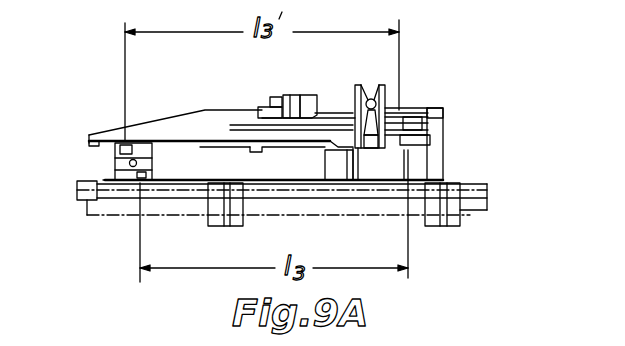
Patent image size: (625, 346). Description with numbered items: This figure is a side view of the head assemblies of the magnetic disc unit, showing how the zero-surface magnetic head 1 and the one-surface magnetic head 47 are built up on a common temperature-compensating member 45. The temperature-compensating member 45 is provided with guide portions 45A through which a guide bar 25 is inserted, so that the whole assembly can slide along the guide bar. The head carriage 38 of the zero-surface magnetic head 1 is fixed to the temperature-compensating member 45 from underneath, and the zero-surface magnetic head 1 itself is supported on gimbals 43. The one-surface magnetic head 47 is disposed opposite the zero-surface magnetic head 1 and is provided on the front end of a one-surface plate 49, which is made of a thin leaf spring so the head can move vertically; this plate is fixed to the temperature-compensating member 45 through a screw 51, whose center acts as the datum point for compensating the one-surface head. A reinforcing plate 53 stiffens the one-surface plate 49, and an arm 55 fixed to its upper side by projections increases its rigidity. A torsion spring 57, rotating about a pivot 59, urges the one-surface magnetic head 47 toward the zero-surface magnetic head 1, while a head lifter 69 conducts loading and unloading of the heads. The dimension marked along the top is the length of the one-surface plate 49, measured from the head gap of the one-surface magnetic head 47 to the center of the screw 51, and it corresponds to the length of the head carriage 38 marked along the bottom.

The 0-surface magnetic head 1 is at (117, 168).
The guide bar 25 is at (488, 200).
The head carriage 38 is at (77, 197).
The gimbals 43 is at (100, 186).
The temperature-compensating member 45 is at (409, 157).
The guide portions 45A is at (227, 226).
The 1-surface magnetic head 47 is at (117, 153).
The 1-surface plate 49 is at (347, 113).
The screw 51 is at (432, 122).
The reinforcing plate 53 is at (423, 145).
The arm 55 is at (207, 120).
The torsion spring 57 is at (408, 110).
The pivot 59 is at (376, 101).
The head lifter 69 is at (263, 108).